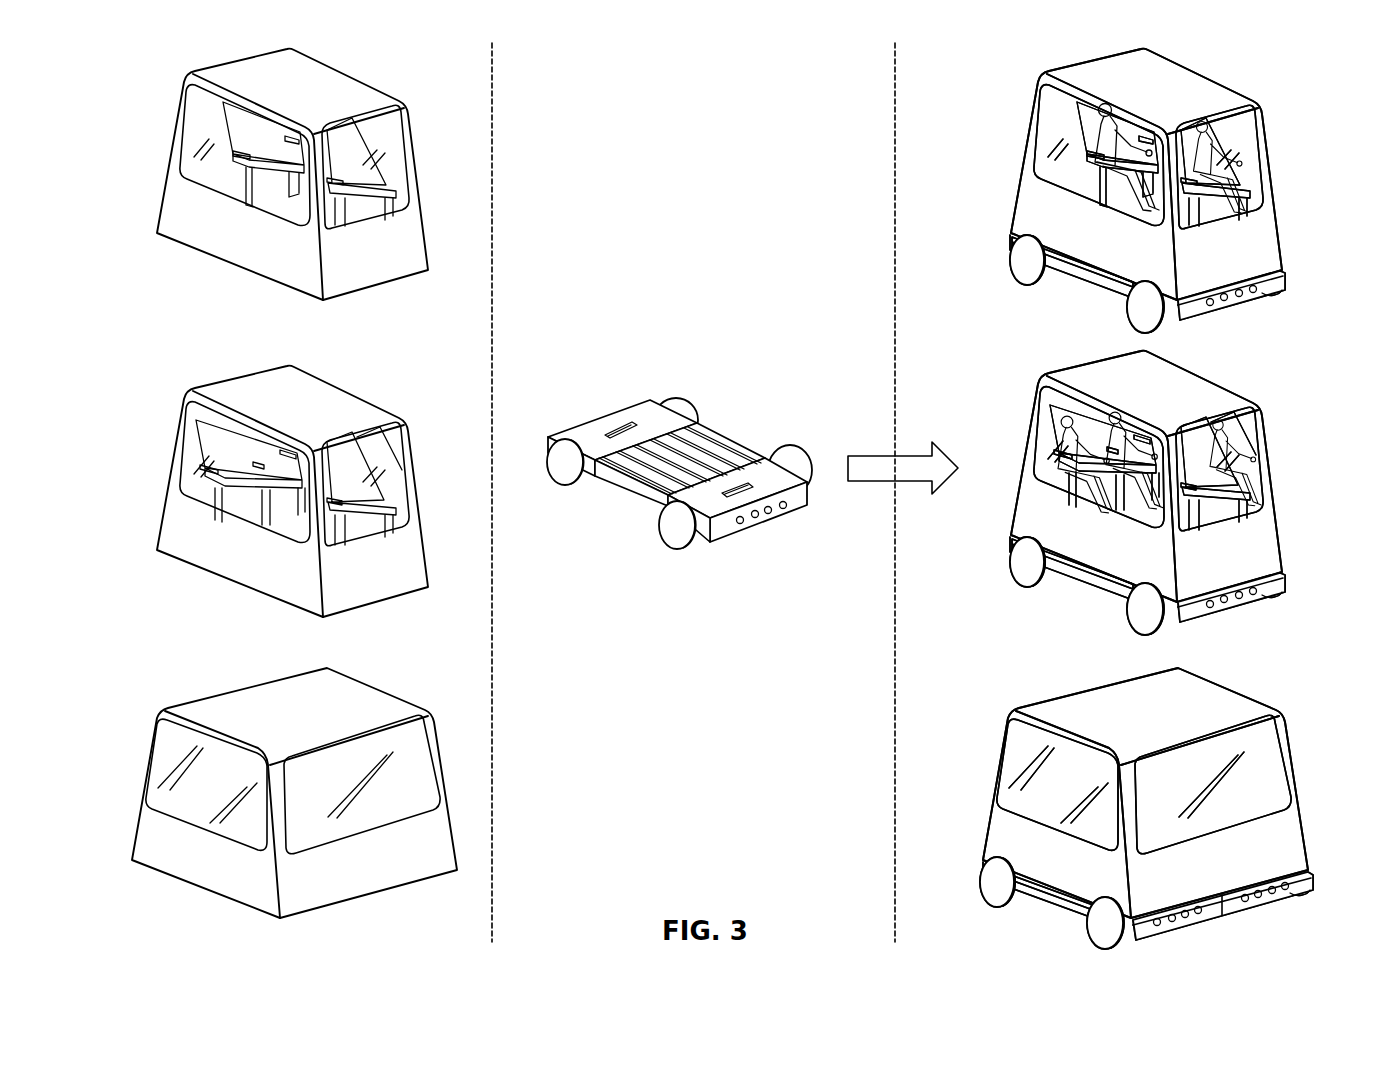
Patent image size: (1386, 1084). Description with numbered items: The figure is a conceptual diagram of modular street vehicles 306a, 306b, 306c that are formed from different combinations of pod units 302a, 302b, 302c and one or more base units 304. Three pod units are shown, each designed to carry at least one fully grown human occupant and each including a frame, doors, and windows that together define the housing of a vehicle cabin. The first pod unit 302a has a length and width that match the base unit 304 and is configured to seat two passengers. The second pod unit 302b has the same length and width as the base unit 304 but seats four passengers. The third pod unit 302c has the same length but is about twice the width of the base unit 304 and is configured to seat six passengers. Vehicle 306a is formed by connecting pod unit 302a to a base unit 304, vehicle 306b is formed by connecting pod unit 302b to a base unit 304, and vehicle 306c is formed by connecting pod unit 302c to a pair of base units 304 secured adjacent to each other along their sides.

The first pod unit 302a is at (183, 88).
The second pod unit 302b is at (228, 380).
The third pod unit 302c is at (207, 702).
The base unit 304 is at (593, 417).
The modular street vehicle 306a is at (998, 90).
The modular street vehicle 306b is at (1004, 398).
The modular street vehicle 306c is at (999, 706).